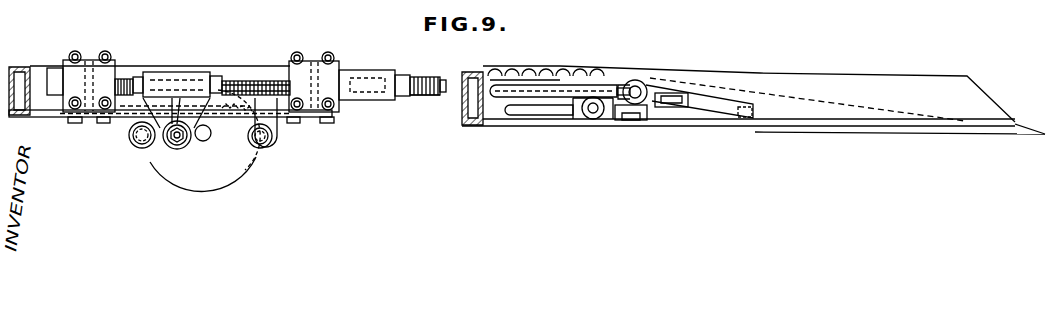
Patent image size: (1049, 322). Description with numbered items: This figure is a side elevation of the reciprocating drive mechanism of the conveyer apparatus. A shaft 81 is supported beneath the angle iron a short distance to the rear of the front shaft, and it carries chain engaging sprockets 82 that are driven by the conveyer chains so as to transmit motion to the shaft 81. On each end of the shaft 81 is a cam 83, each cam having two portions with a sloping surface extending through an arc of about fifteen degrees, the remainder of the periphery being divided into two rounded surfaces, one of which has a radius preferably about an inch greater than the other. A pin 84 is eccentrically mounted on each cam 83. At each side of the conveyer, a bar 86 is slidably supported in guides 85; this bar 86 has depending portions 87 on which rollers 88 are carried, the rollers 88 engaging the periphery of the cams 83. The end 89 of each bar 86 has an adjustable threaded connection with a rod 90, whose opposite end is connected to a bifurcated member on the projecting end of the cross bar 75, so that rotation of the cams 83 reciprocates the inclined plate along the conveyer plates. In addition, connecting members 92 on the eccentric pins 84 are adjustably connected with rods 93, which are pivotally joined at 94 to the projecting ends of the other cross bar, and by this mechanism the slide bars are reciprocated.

The cross bar 75 is at (635, 120).
The shaft 81 is at (203, 142).
The chain engaging sprockets 82 is at (242, 177).
The cam 83 is at (175, 175).
The pin 84 is at (168, 147).
The guides 85 is at (108, 65).
The bar 86 is at (242, 73).
The depending portions 87 is at (132, 125).
The rollers 88 is at (132, 143).
The end of bar 89 is at (427, 75).
The rod 90 is at (423, 96).
The connecting members 92 is at (202, 73).
The rods 93 is at (270, 80).
The pivot 94 is at (638, 85).